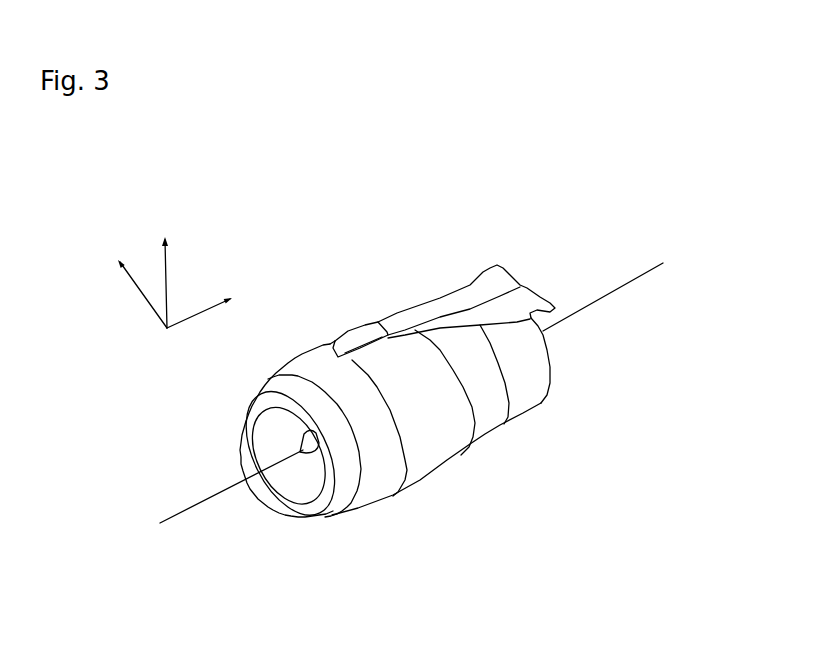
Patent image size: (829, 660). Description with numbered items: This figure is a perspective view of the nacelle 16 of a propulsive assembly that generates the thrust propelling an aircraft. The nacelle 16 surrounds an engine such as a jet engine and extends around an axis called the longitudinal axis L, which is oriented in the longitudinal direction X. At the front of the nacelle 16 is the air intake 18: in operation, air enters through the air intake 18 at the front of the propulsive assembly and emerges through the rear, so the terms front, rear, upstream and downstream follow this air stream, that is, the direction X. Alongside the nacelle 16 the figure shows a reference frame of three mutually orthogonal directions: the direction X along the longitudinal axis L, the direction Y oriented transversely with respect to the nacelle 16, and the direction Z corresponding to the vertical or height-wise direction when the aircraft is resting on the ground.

The nacelle 16 is at (328, 316).
The air intake 18 is at (344, 493).
The longitudinal axis L is at (405, 401).
The longitudinal direction X is at (207, 313).
The transverse direction Y is at (134, 287).
The vertical direction Z is at (171, 276).